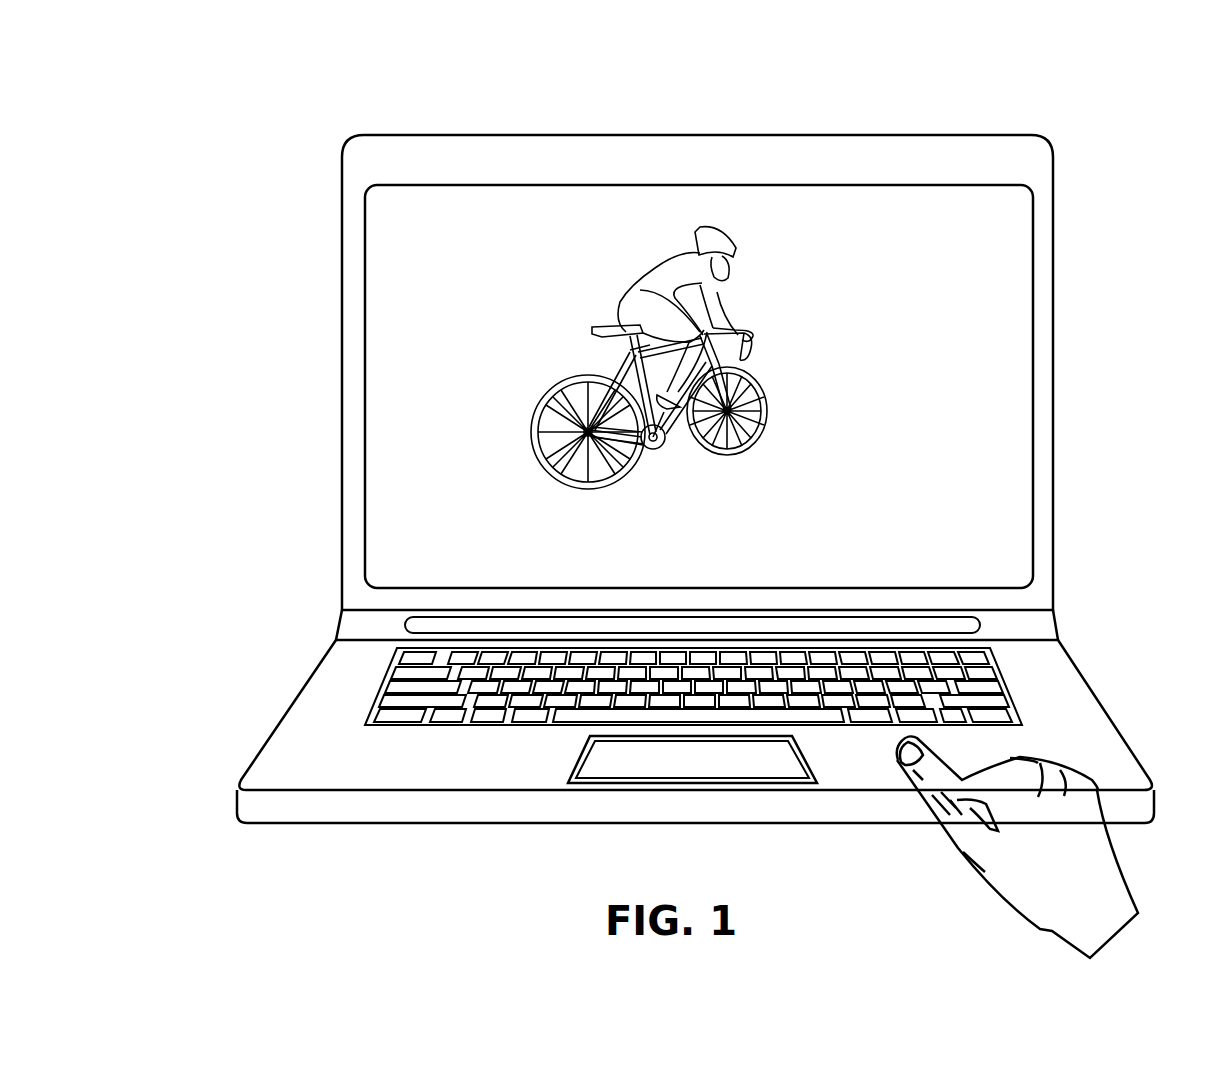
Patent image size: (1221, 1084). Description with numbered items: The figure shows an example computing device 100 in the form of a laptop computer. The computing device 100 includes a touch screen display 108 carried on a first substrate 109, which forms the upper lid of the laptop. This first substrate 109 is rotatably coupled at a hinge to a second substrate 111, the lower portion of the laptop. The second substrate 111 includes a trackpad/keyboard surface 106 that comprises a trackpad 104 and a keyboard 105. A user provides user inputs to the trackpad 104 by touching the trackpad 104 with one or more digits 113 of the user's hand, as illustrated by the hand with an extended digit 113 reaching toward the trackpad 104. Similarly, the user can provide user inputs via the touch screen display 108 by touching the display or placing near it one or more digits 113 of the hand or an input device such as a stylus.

The computing device 100 is at (252, 120).
The trackpad 104 is at (617, 762).
The keyboard 105 is at (357, 679).
The trackpad/keyboard surface 106 is at (272, 765).
The touch screen display 108 is at (947, 285).
The first substrate 109 is at (341, 247).
The second substrate 111 is at (283, 712).
The digits 113 is at (926, 797).